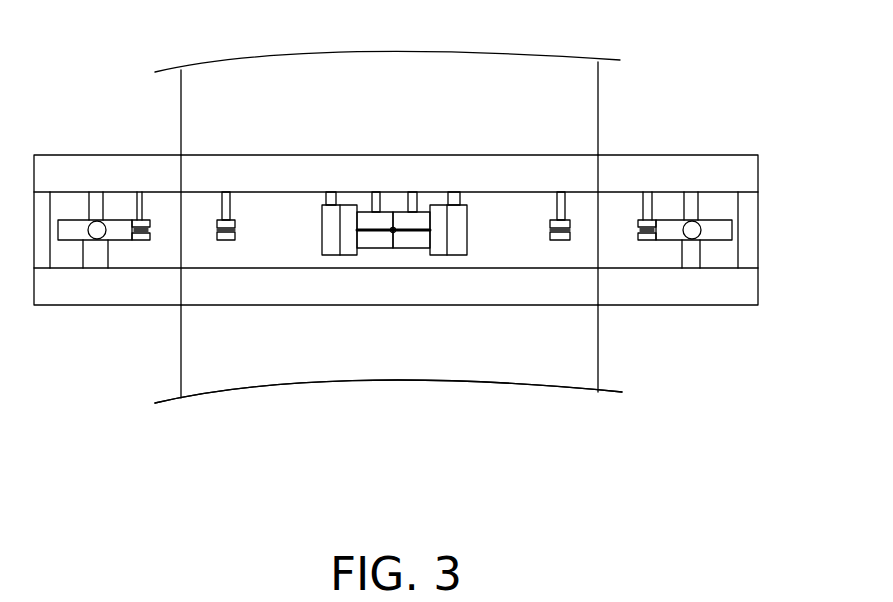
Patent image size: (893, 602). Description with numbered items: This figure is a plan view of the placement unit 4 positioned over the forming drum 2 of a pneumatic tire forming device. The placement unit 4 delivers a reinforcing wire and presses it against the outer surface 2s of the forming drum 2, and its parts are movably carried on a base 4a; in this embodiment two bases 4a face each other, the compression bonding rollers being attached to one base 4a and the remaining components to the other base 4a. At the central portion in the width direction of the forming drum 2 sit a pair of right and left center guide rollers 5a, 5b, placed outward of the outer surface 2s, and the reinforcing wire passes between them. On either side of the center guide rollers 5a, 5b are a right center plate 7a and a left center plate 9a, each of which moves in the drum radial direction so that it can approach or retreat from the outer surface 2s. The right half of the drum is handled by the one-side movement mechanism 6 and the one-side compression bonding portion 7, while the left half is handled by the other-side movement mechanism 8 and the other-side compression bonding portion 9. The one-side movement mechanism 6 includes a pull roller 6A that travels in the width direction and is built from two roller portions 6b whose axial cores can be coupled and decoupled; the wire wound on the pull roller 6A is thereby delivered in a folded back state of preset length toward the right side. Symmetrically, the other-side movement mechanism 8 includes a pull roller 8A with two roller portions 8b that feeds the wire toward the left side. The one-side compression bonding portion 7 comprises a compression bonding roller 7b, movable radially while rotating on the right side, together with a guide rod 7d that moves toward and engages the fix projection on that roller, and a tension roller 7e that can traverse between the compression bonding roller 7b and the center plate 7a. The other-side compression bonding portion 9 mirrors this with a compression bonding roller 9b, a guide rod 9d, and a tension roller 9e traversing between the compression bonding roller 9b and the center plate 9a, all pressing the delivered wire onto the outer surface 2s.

The forming drum 2 is at (421, 388).
The outer surface 2s is at (250, 376).
The placement unit 4 is at (394, 128).
The base 4a is at (455, 162).
The center guide roller 5a is at (415, 218).
The center guide roller 5b is at (373, 217).
The one-side movement mechanism 6 is at (529, 218).
The pull roller 6A is at (492, 236).
The roller portions 6b is at (550, 228).
The one-side compression bonding portion 7 is at (681, 188).
The center plate 7a is at (465, 210).
The compression bonding roller 7b is at (708, 220).
The guide rod 7d is at (695, 242).
The tension roller 7e is at (645, 218).
The other-side movement mechanism 8 is at (257, 218).
The pull roller 8A is at (292, 237).
The roller portions 8b is at (235, 228).
The other-side compression bonding portion 9 is at (103, 190).
The center plate 9a is at (320, 208).
The compression bonding roller 9b is at (80, 222).
The guide rod 9d is at (100, 242).
The tension roller 9e is at (145, 218).